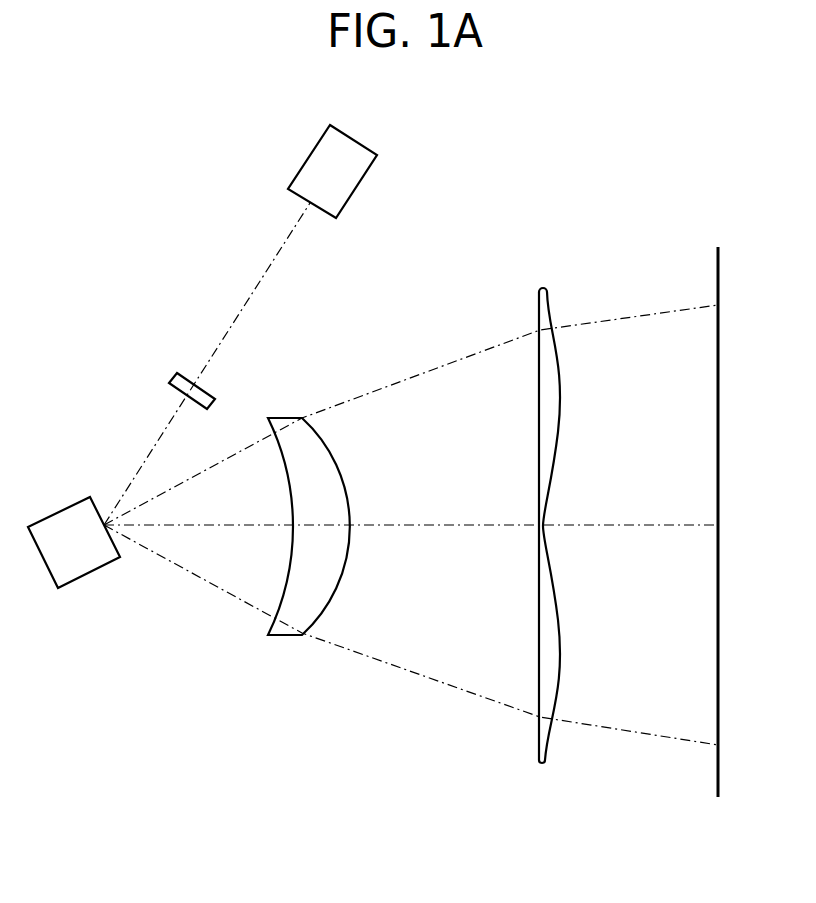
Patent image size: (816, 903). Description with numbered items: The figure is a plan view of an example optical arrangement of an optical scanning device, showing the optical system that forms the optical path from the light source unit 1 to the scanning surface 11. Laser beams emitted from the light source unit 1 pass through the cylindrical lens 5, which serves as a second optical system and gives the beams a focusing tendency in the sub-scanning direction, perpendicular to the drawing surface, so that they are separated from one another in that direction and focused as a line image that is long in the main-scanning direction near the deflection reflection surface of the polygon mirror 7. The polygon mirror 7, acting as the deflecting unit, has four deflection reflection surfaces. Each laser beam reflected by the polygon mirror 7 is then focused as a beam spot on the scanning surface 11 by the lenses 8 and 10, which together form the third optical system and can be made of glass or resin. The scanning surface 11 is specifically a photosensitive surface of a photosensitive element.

The light source unit 1 is at (360, 185).
The cylindrical lens 5 is at (171, 382).
The polygon mirror 7 is at (33, 521).
The lens 8 is at (341, 478).
The lens 10 is at (560, 375).
The scanning surface 11 is at (720, 413).